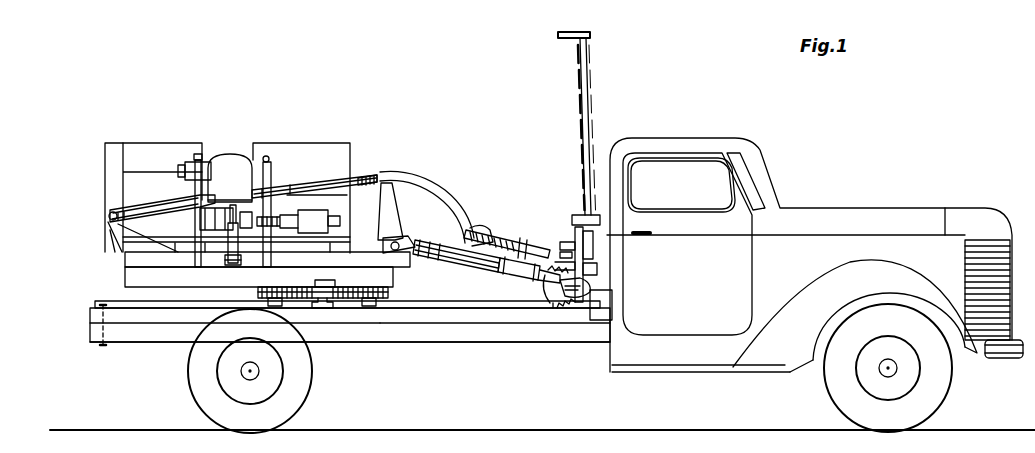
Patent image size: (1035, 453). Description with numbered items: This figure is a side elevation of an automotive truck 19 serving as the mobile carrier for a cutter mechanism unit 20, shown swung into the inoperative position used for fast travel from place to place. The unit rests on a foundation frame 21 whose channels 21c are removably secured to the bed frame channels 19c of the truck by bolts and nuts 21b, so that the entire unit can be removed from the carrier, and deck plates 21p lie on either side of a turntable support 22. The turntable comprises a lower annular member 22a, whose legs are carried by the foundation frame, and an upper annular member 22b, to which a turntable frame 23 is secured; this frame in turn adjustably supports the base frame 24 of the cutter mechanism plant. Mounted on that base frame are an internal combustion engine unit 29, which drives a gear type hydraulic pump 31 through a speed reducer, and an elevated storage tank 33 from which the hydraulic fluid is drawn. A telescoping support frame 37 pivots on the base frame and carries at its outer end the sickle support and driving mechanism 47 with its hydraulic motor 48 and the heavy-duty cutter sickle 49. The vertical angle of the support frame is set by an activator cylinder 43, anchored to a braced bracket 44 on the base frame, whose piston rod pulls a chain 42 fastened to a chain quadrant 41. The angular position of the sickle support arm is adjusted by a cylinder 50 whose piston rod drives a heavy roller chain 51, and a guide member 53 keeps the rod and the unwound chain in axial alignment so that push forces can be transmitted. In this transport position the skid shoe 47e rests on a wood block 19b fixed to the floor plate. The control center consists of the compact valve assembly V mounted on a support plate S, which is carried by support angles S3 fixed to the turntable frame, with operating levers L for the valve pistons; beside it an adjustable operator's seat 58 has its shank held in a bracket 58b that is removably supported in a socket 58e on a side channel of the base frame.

The automotive truck 19 is at (598, 352).
The wood block 19b is at (604, 300).
The bed frame channels 19c is at (513, 334).
The cutter mechanism unit 20 is at (385, 163).
The foundation frame 21 is at (85, 306).
The bolts and nuts 21b is at (103, 345).
The channels 21c is at (437, 322).
The deck plates 21p is at (182, 305).
The turntable support 22 is at (397, 292).
The lower annular member 22a is at (335, 300).
The upper annular member 22b is at (298, 300).
The turntable frame 23 is at (118, 272).
The base frame 24 is at (118, 258).
The internal combustion engine unit 29 is at (168, 143).
The gear type hydraulic pump 31 is at (318, 210).
The storage tank 33 is at (300, 150).
The telescoping support frame 37 is at (514, 248).
The chain quadrant 41 is at (442, 194).
The chain 42 is at (368, 177).
The activator cylinder 43 is at (172, 200).
The braced bracket 44 is at (100, 228).
The sickle support and driving mechanism 47 is at (578, 228).
The skid shoe 47e is at (597, 268).
The hydraulic motor 48 is at (590, 292).
The cutter sickle 49 is at (592, 108).
The cylinder 50 is at (482, 228).
The heavy roller chain 51 is at (571, 254).
The guide member 53 is at (540, 247).
The operator's seat 58 is at (230, 178).
The bracket 58b is at (232, 245).
The socket 58e is at (240, 265).
The operating lever L is at (201, 160).
The valve assembly V is at (264, 158).
The support plate S is at (275, 195).
The support angles S3 is at (185, 185).